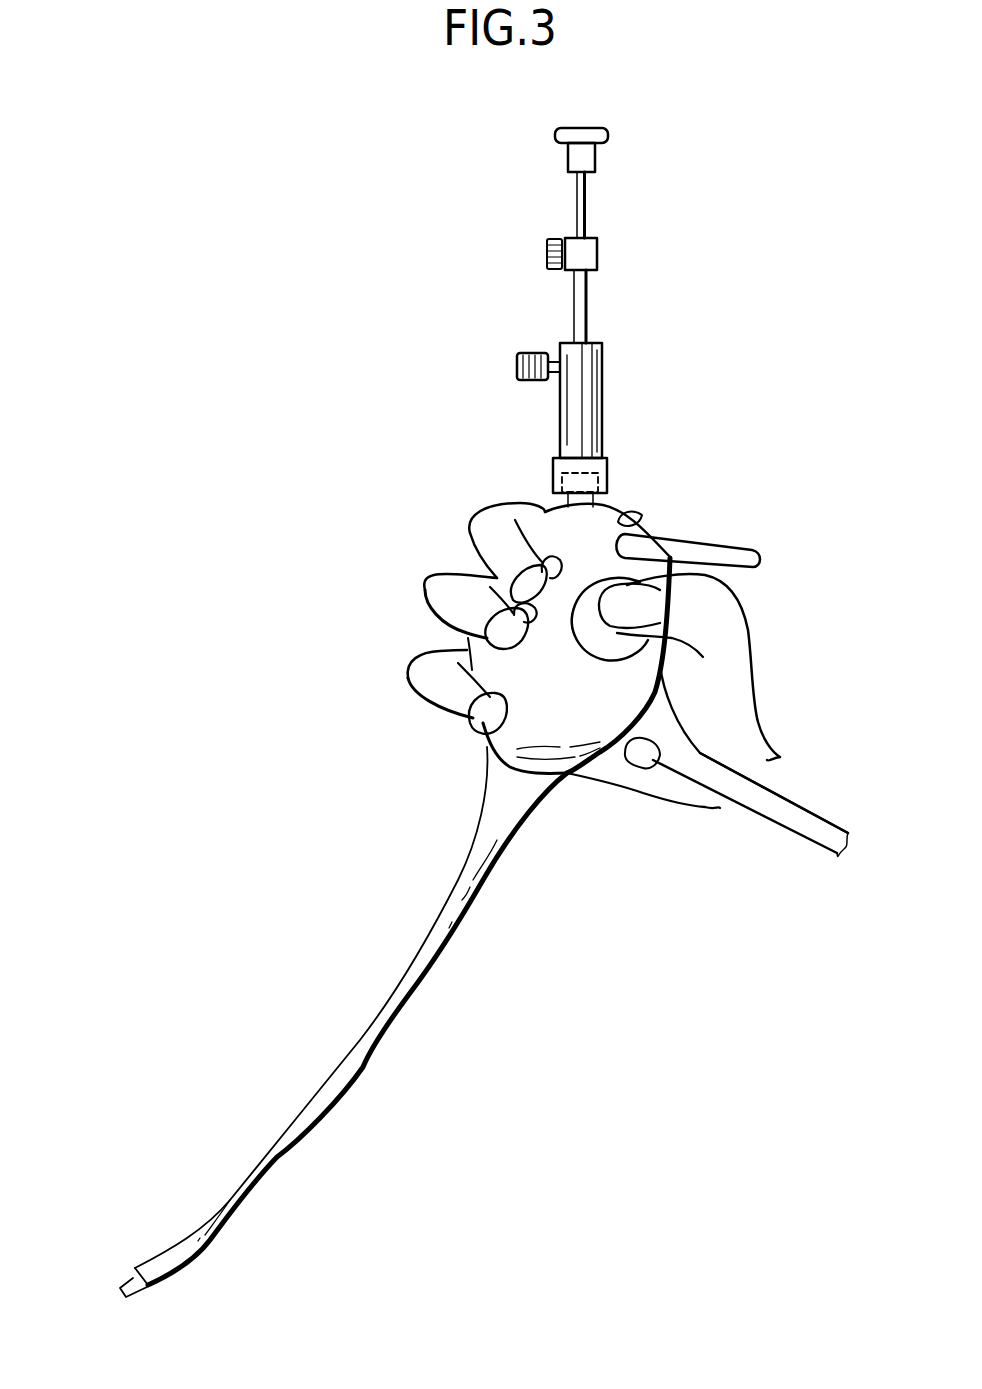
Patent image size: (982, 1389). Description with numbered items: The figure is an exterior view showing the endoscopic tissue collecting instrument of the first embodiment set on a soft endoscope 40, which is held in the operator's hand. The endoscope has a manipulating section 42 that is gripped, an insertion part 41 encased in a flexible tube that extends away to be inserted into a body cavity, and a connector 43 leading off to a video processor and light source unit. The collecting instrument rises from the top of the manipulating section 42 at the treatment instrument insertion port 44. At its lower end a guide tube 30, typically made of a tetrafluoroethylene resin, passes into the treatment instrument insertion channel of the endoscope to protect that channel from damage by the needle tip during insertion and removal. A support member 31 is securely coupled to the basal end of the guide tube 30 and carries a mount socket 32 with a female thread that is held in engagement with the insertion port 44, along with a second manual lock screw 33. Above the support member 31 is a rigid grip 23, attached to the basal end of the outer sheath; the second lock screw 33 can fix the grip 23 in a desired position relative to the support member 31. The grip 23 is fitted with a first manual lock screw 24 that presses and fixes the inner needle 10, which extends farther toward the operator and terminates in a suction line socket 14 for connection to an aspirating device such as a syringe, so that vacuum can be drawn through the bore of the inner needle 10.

The suction line socket 14 is at (596, 150).
The inner needle 10 is at (588, 207).
The first manual lock screw 24 is at (547, 254).
The grip 23 is at (589, 290).
The support member 31 is at (603, 403).
The second manual lock screw 33 is at (517, 367).
The mount socket 32 is at (553, 470).
The treatment instrument insertion port 44 is at (599, 488).
The soft endoscope 40 is at (452, 757).
The manipulating section 42 is at (550, 757).
The connector 43 is at (777, 820).
The insertion part 41 is at (365, 1068).
The guide tube 30 is at (127, 1282).